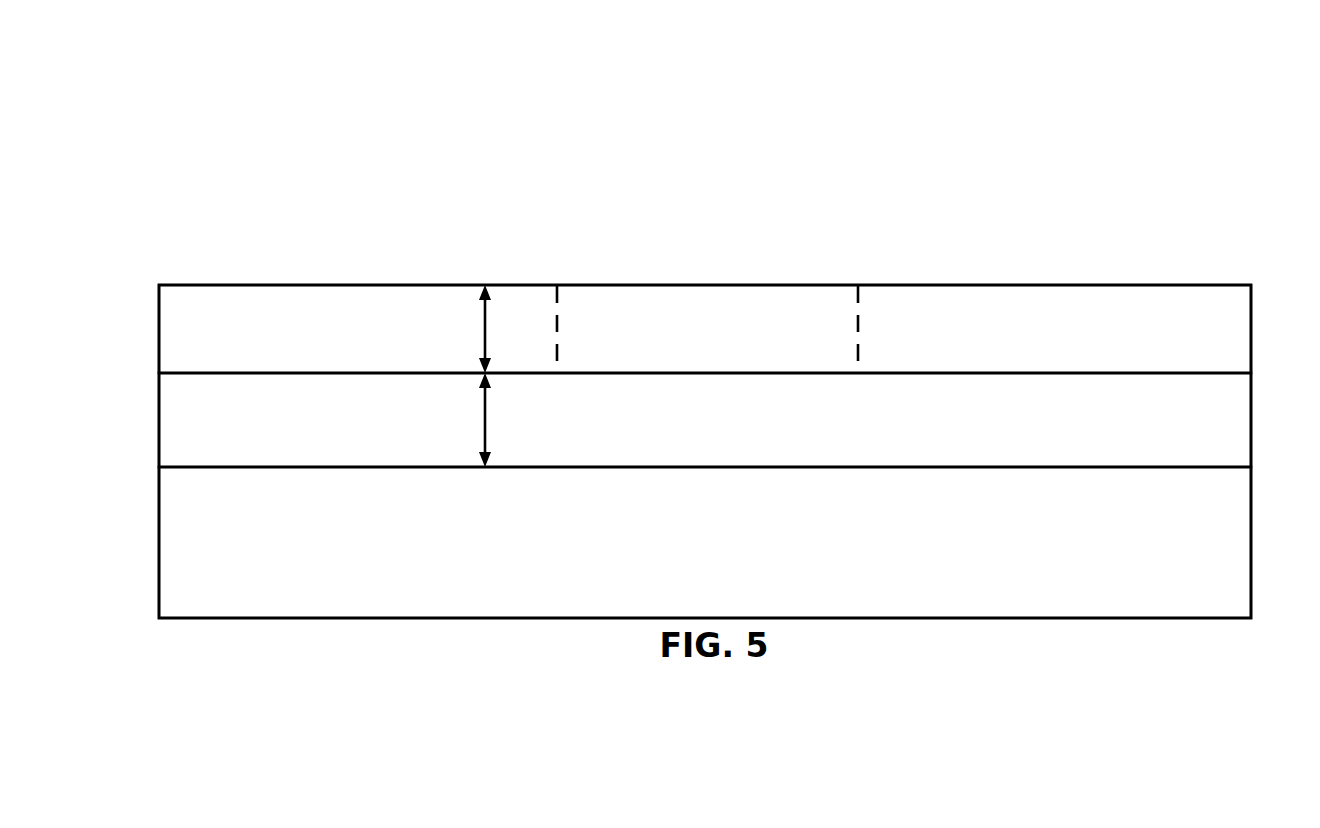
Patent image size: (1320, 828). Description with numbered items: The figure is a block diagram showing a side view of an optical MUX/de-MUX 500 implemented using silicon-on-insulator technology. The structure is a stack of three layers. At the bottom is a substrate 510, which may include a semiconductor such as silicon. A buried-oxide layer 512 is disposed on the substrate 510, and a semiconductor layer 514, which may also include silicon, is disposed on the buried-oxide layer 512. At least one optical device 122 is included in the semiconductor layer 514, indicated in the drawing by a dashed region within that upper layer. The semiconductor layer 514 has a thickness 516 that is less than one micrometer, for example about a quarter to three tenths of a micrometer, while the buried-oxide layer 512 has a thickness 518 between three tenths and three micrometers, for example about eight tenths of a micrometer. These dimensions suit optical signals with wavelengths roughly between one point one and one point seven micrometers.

The optical MUX/de-MUX 500 is at (1105, 141).
The semiconductor layer 514 is at (705, 329).
The optical device 122 is at (707, 329).
The buried-oxide layer 512 is at (705, 420).
The substrate 510 is at (705, 542).
The thickness 516 is at (481, 342).
The thickness 518 is at (482, 435).